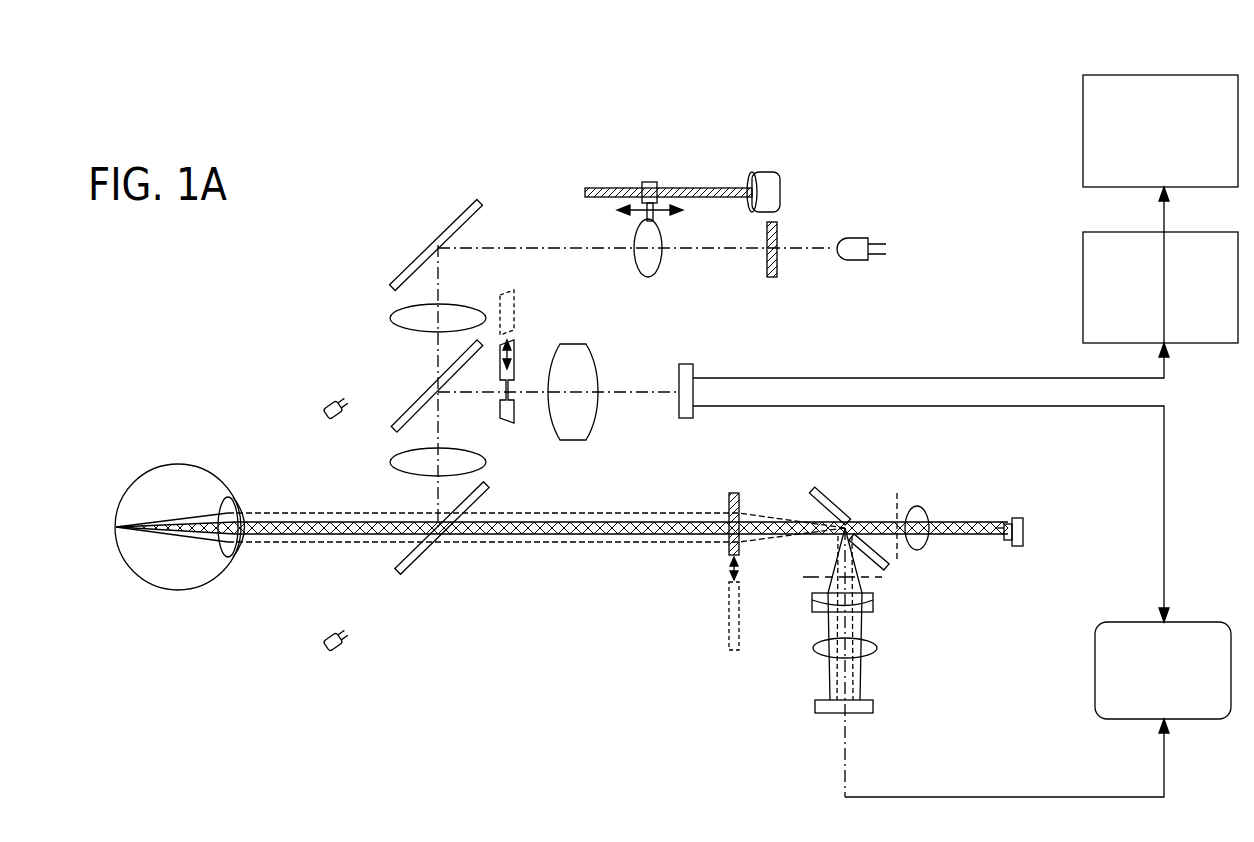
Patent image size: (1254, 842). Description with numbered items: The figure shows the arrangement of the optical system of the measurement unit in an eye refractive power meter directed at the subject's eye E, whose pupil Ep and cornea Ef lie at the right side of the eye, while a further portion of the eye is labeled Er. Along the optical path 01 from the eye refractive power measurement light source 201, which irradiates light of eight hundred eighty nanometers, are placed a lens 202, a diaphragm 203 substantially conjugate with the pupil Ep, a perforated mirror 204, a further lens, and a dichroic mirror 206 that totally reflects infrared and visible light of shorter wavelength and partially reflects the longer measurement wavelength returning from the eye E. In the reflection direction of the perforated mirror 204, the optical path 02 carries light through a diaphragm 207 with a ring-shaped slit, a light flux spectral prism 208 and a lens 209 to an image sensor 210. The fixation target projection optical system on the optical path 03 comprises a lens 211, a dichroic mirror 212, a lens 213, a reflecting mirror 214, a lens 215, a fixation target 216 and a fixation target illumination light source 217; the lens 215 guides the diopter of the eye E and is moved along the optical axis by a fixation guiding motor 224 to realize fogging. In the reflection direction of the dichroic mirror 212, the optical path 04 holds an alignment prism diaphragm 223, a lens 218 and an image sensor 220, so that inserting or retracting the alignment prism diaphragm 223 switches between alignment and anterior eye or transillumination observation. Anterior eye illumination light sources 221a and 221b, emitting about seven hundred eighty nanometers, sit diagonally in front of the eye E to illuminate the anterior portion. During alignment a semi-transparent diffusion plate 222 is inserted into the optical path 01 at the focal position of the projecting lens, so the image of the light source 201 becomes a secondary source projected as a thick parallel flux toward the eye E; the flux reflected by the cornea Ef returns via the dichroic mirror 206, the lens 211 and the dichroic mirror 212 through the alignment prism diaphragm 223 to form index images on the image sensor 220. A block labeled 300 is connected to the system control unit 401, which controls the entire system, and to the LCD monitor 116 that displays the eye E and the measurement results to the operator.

The subject's eye E is at (182, 463).
The pupil Ep is at (231, 497).
The cornea Ef is at (240, 560).
The fundus / retina Er is at (174, 591).
The optical path 01 is at (966, 536).
The optical path 02 is at (855, 682).
The optical path of the fixation target projection optical system 03 is at (436, 360).
The optical path 04 is at (627, 396).
The eye refractive power measurement light source 201 is at (1016, 516).
The lens 202 is at (920, 505).
The diaphragm 203 is at (896, 493).
The perforated mirror 204 is at (812, 490).
The dichroic mirror 206 is at (423, 559).
The diaphragm 207 is at (806, 577).
The light flux spectral prism 208 is at (875, 603).
The lens 209 is at (878, 648).
The image sensor 210 is at (815, 706).
The lens 211 is at (391, 463).
The dichroic mirror 212 is at (413, 417).
The lens 213 is at (391, 316).
The reflecting mirror 214 is at (434, 236).
The lens 215 is at (664, 266).
The fixation target 216 is at (779, 241).
The fixation target illumination light source 217 is at (852, 262).
The lens 218 is at (596, 353).
The image sensor 220 is at (694, 367).
The anterior eye illumination light source 221a is at (331, 654).
The anterior eye illumination light source 221b is at (326, 404).
The diffusion plate 222 is at (724, 498).
The alignment prism diaphragm 223 is at (507, 425).
The fixation guiding motor 224 is at (783, 187).
The LCD monitor 116 is at (1094, 666).
The alignment detection unit 300 is at (1082, 290).
The system control unit 401 is at (1082, 130).